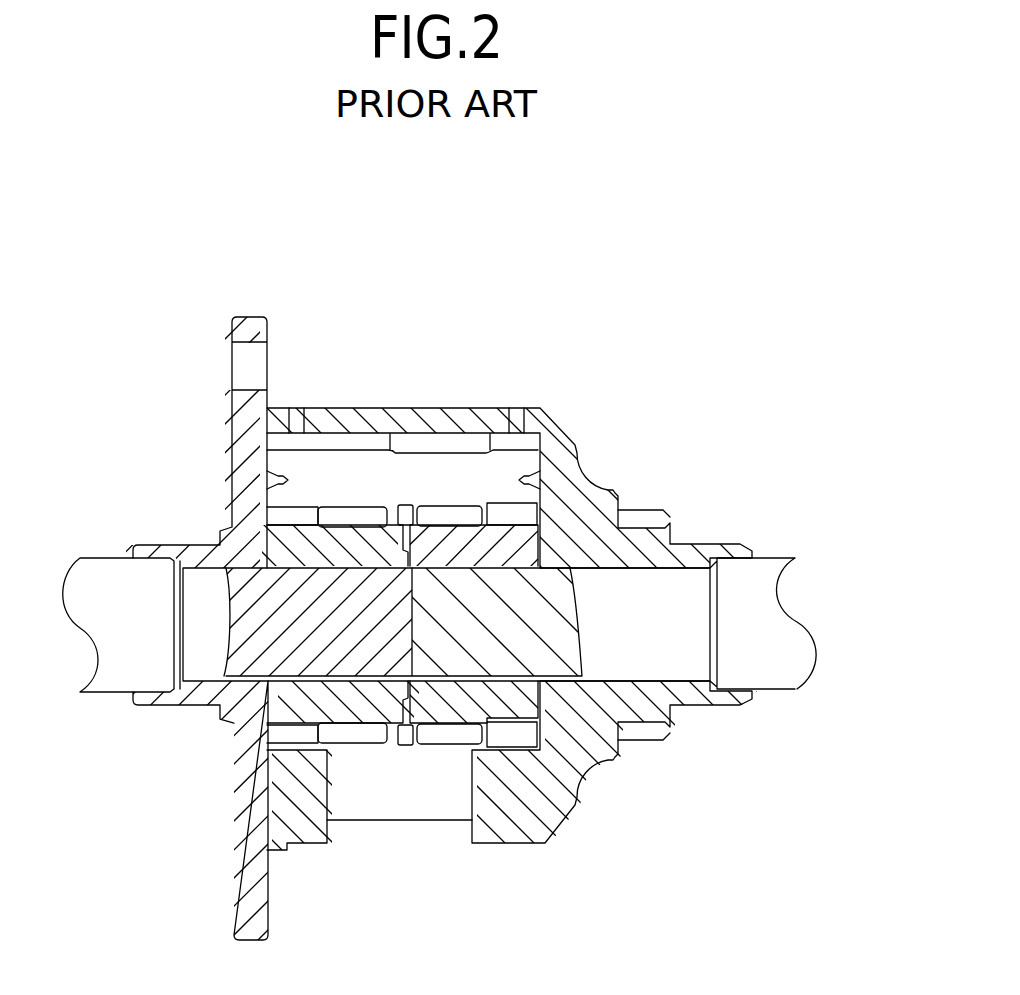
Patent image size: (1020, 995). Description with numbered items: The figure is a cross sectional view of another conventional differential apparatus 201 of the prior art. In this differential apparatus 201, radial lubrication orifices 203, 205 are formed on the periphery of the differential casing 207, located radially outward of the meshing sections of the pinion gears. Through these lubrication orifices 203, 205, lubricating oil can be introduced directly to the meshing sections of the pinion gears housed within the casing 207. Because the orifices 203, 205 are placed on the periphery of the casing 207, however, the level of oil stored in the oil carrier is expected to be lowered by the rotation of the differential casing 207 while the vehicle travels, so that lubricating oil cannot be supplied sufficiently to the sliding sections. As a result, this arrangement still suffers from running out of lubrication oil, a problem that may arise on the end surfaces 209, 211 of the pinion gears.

The differential apparatus 201 is at (603, 305).
The lubrication orifice 203 is at (298, 408).
The lubrication orifice 205 is at (515, 408).
The differential casing 207 is at (577, 453).
The end surface of pinion gear 209 is at (263, 462).
The end surface of pinion gear 211 is at (540, 502).